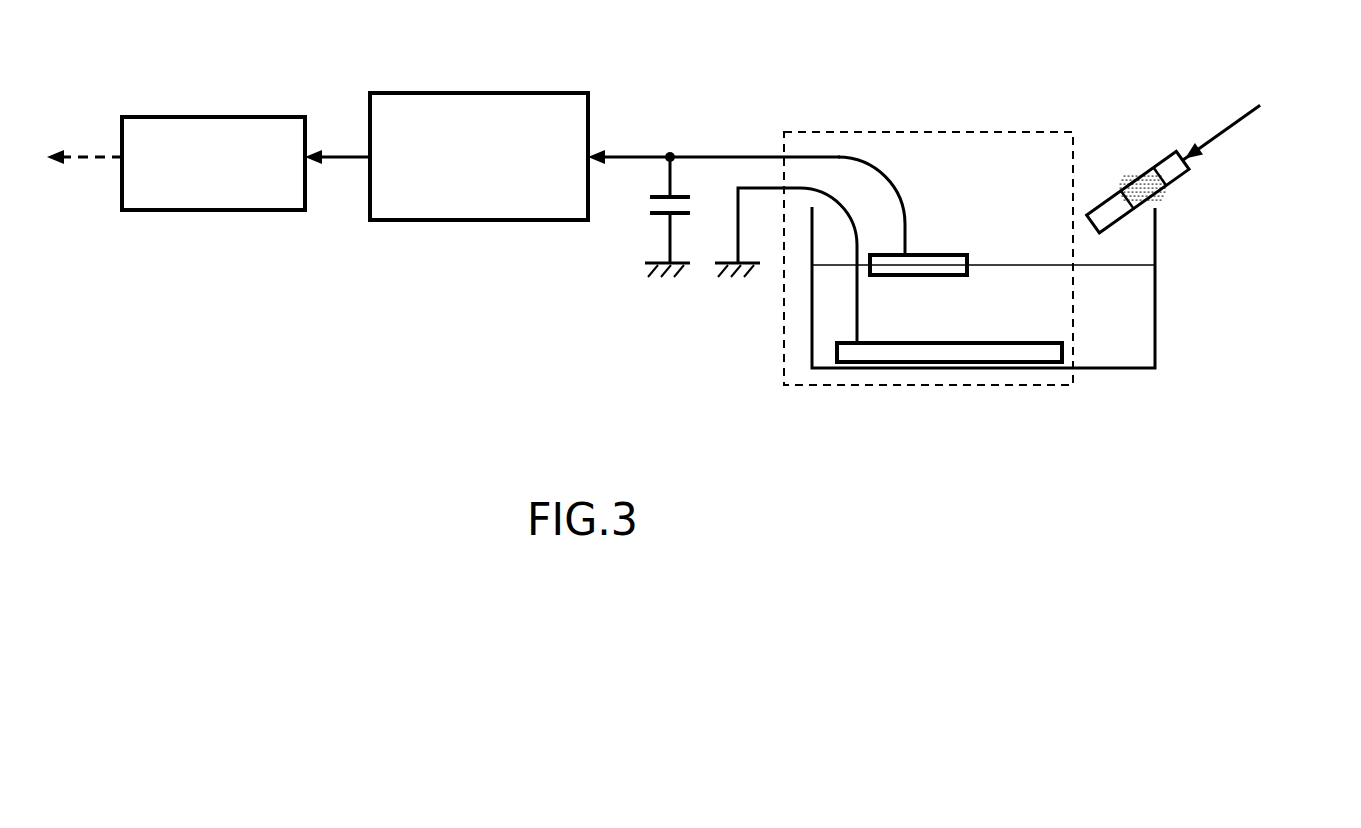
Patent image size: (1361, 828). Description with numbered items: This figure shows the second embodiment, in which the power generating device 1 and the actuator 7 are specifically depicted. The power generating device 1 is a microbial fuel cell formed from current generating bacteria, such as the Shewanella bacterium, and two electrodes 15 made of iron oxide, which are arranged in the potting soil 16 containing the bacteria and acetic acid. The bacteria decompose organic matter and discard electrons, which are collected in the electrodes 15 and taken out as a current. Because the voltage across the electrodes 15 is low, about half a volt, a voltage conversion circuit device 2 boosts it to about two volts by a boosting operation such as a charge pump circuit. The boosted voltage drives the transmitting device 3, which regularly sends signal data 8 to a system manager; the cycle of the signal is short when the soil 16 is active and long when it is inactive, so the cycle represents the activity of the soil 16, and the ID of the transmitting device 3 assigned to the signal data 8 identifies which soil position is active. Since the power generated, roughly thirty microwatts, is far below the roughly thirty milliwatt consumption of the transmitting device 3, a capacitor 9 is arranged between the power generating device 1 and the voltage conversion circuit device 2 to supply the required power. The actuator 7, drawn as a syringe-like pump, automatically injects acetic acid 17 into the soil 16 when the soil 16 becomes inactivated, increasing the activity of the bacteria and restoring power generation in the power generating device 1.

The power generating device 1 is at (917, 132).
The voltage conversion circuit device 2 is at (473, 93).
The transmitting device 3 is at (200, 113).
The actuator 7 is at (1260, 113).
The signal data 8 is at (78, 157).
The capacitor 9 is at (643, 208).
The electrodes 15 is at (930, 255).
The potting soil 16 is at (1126, 313).
The acetic acid 17 is at (1135, 172).